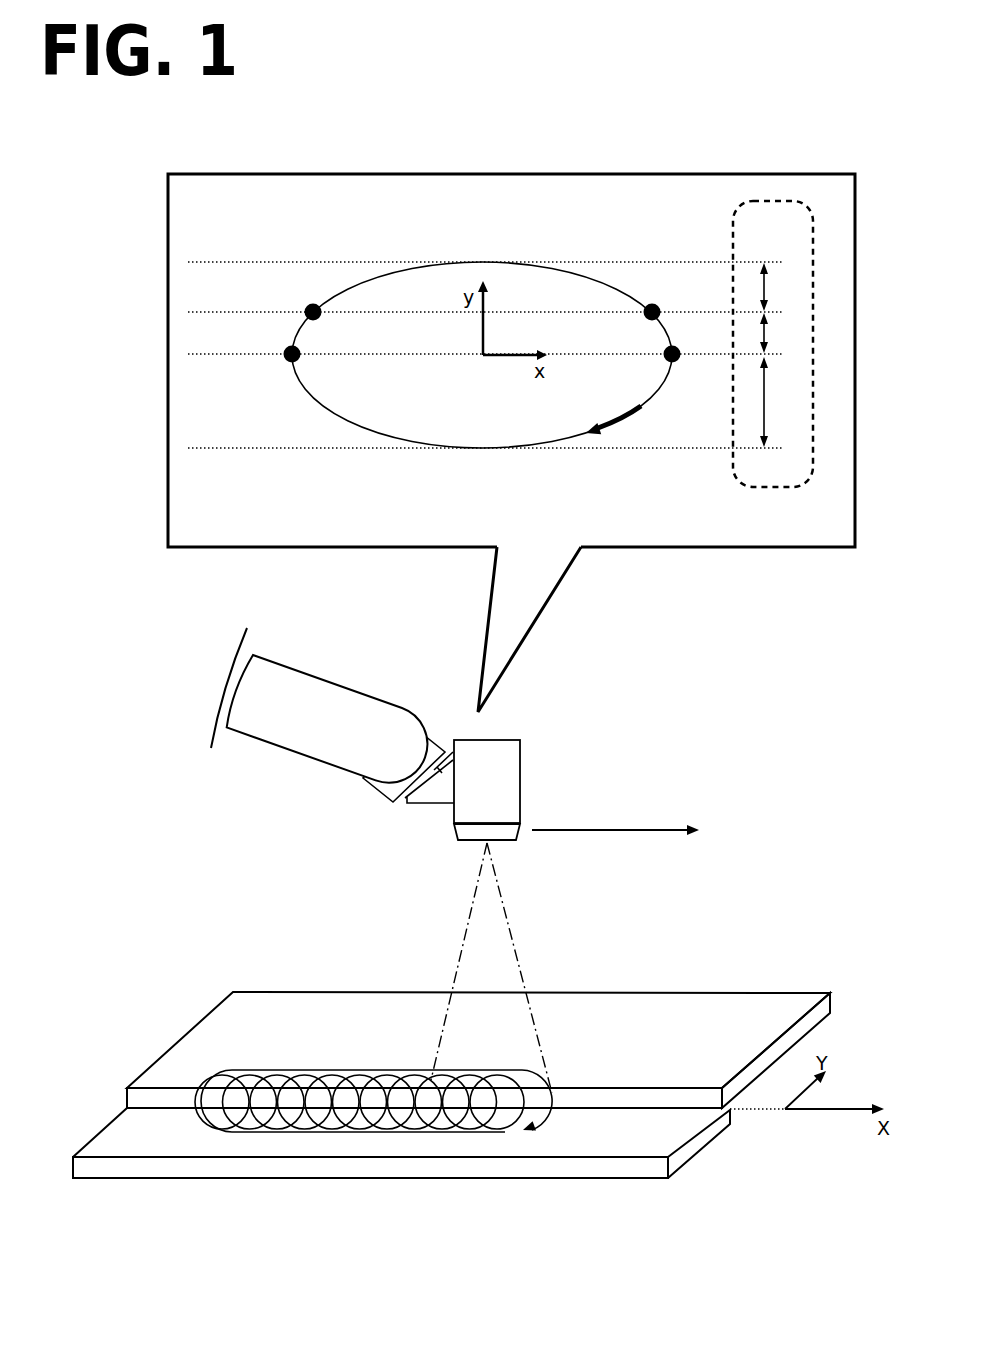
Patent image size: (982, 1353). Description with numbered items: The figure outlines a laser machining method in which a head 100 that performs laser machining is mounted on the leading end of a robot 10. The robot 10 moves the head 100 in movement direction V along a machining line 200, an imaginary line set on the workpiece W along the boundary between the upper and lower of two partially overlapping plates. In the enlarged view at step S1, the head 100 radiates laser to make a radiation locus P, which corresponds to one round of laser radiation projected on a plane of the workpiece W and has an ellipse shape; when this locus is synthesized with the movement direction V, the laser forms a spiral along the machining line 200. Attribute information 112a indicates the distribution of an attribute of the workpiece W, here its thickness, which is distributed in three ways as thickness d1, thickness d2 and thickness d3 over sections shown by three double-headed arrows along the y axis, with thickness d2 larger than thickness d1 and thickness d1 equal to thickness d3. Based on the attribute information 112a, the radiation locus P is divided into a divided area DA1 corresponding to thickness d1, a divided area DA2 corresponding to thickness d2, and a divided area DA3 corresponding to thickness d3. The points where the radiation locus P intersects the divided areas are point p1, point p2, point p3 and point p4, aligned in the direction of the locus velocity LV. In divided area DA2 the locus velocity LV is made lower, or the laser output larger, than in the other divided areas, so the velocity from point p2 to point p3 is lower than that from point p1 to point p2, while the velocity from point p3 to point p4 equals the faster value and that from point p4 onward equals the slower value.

The step S1 is at (654, 174).
The divided area DA1 is at (410, 297).
The divided area DA2 is at (360, 338).
The divided area DA3 is at (403, 408).
The radiation locus P is at (562, 262).
The point p1 is at (680, 360).
The point p2 is at (290, 362).
The point p3 is at (306, 307).
The point p4 is at (659, 308).
The locus velocity LV is at (622, 413).
The thickness d1 is at (785, 287).
The thickness d2 is at (785, 333).
The thickness d3 is at (785, 402).
The attribute information 112a is at (734, 474).
The robot 10 is at (390, 680).
The head 100 is at (497, 748).
The movement direction V is at (623, 830).
The workpiece W is at (657, 978).
The machining line 200 is at (127, 1108).